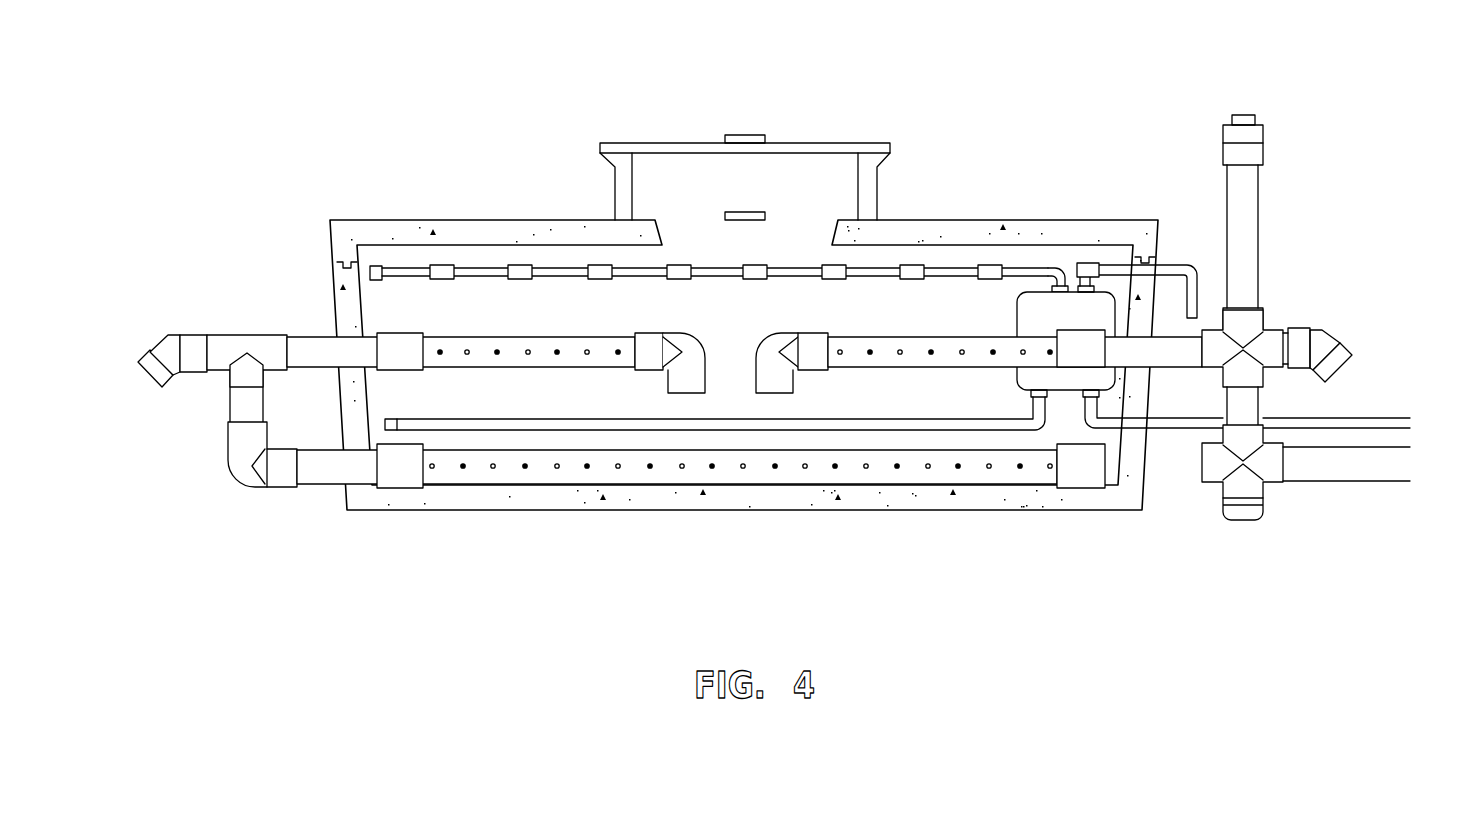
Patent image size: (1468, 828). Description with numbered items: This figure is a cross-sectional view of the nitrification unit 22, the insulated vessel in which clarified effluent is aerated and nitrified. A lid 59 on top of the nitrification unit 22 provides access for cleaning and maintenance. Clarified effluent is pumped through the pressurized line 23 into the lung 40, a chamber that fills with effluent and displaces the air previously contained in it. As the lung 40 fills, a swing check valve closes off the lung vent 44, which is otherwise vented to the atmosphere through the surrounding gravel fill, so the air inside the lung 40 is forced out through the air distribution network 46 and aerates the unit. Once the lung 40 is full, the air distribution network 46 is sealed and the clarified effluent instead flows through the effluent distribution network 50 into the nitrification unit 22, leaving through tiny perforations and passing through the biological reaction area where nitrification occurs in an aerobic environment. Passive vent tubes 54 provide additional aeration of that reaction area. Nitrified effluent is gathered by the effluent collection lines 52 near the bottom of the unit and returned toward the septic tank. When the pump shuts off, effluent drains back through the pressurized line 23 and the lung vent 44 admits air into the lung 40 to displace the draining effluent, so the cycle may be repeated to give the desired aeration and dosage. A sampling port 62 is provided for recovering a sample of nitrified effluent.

The nitrification unit 22 is at (445, 203).
The lid 59 is at (652, 143).
The effluent distribution network 50 is at (948, 265).
The lung 40 is at (1032, 308).
The lung vent 44 is at (1150, 330).
The air distribution network 46 is at (988, 428).
The pressurized line 23 is at (1378, 417).
The passive vent tubes 54 is at (492, 368).
The effluent collection lines 52 is at (630, 467).
The sampling port 62 is at (1262, 200).